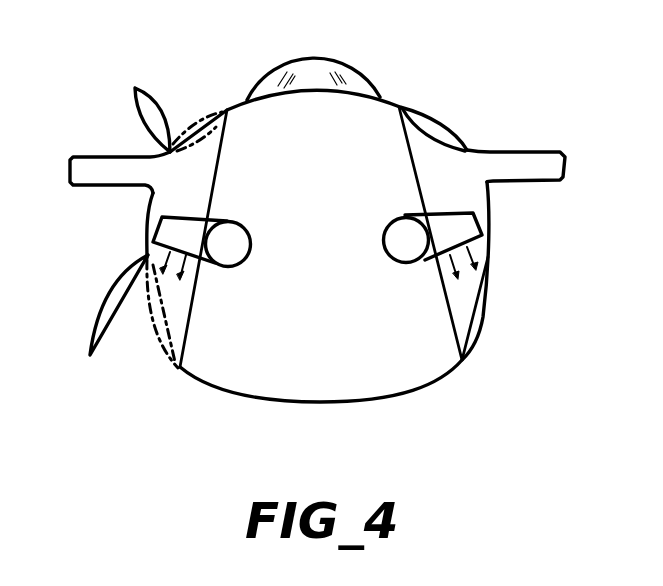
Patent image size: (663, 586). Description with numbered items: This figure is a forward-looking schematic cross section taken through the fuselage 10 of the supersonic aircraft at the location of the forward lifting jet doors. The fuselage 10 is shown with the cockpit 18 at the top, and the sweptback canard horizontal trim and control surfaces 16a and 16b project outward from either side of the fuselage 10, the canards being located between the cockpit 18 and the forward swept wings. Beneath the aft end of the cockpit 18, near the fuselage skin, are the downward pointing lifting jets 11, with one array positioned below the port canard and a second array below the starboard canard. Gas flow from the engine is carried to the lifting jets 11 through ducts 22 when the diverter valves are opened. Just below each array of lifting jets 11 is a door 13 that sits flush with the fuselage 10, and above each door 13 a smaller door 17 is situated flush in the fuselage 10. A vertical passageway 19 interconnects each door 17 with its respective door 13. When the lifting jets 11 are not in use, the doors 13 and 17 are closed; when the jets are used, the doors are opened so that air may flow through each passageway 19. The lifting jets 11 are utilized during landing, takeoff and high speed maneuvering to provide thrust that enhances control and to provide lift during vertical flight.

The fuselage 10 is at (317, 403).
The lifting jets 11 is at (176, 232).
The door 13 is at (105, 318).
The canard horizontal trim and control surface 16a is at (113, 173).
The canard horizontal trim and control surface 16b is at (518, 170).
The door 17 is at (157, 113).
The cockpit 18 is at (317, 74).
The vertical passageway 19 is at (203, 160).
The ducts 22 is at (228, 252).